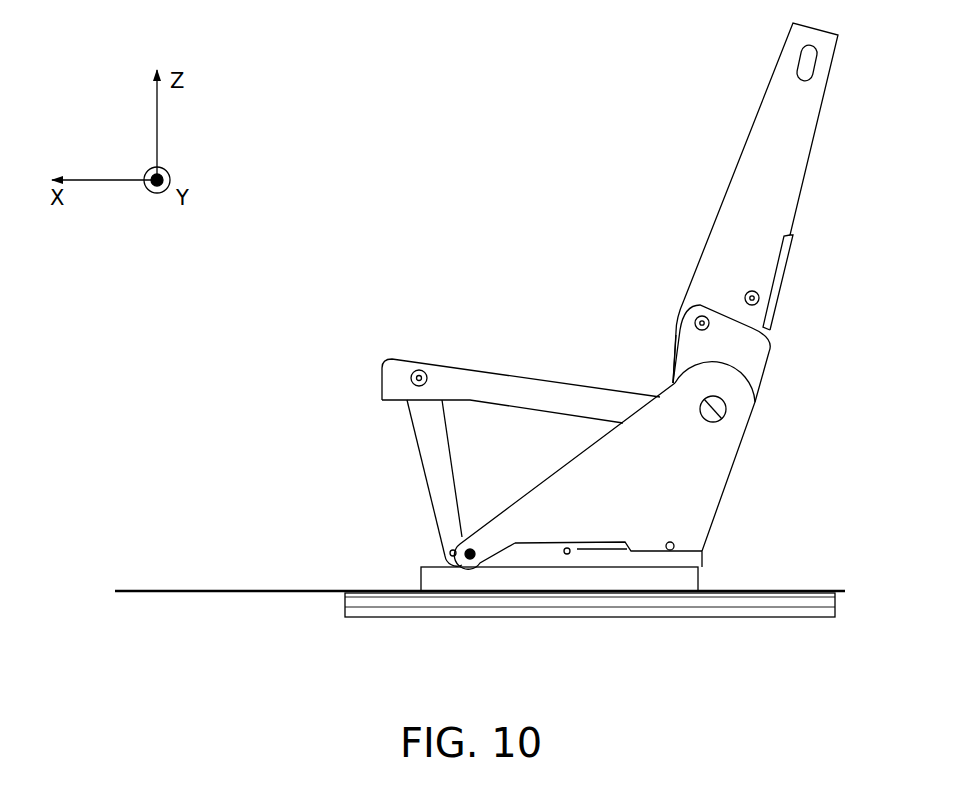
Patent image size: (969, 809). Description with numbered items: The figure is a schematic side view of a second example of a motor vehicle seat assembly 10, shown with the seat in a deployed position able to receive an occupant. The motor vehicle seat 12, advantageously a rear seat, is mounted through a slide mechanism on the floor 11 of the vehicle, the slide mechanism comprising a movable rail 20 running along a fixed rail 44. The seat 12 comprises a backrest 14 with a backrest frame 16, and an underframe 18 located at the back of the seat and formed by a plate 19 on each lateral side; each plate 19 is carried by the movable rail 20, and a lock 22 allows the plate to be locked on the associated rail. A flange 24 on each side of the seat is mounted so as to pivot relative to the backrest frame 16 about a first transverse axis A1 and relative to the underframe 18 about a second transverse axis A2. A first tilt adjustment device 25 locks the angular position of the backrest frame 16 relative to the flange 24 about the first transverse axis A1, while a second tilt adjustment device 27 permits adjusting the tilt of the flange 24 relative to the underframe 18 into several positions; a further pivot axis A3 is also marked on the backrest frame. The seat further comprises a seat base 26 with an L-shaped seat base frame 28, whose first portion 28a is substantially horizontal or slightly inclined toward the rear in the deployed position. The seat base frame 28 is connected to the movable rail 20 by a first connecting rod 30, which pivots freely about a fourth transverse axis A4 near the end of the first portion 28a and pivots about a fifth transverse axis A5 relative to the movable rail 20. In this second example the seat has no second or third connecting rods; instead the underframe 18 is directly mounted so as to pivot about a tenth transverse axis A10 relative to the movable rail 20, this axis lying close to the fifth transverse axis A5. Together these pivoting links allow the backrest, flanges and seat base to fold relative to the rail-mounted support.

The motor vehicle seat assembly 10 is at (427, 119).
The floor 11 is at (206, 590).
The motor vehicle seat 12 is at (555, 186).
The backrest 14 is at (751, 94).
The backrest frame 16 is at (778, 190).
The underframe 18 is at (626, 526).
The plate 19 is at (692, 487).
The movable rail 20 is at (571, 555).
The lock 22 is at (673, 551).
The flange 24 is at (750, 355).
The first tilt adjustment device 25 is at (669, 366).
The seat base 26 is at (360, 383).
The second tilt adjustment device 27 is at (722, 409).
The seat base frame 28 is at (395, 293).
The first portion 28a is at (463, 383).
The first connecting rod 30 is at (438, 468).
The fixed rail 44 is at (760, 606).
The first transverse axis A1 is at (697, 319).
The second transverse axis A2 is at (724, 414).
The third transverse axis A3 is at (758, 294).
The fourth transverse axis A4 is at (414, 375).
The fifth transverse axis A5 is at (451, 558).
The tenth transverse axis A10 is at (466, 568).